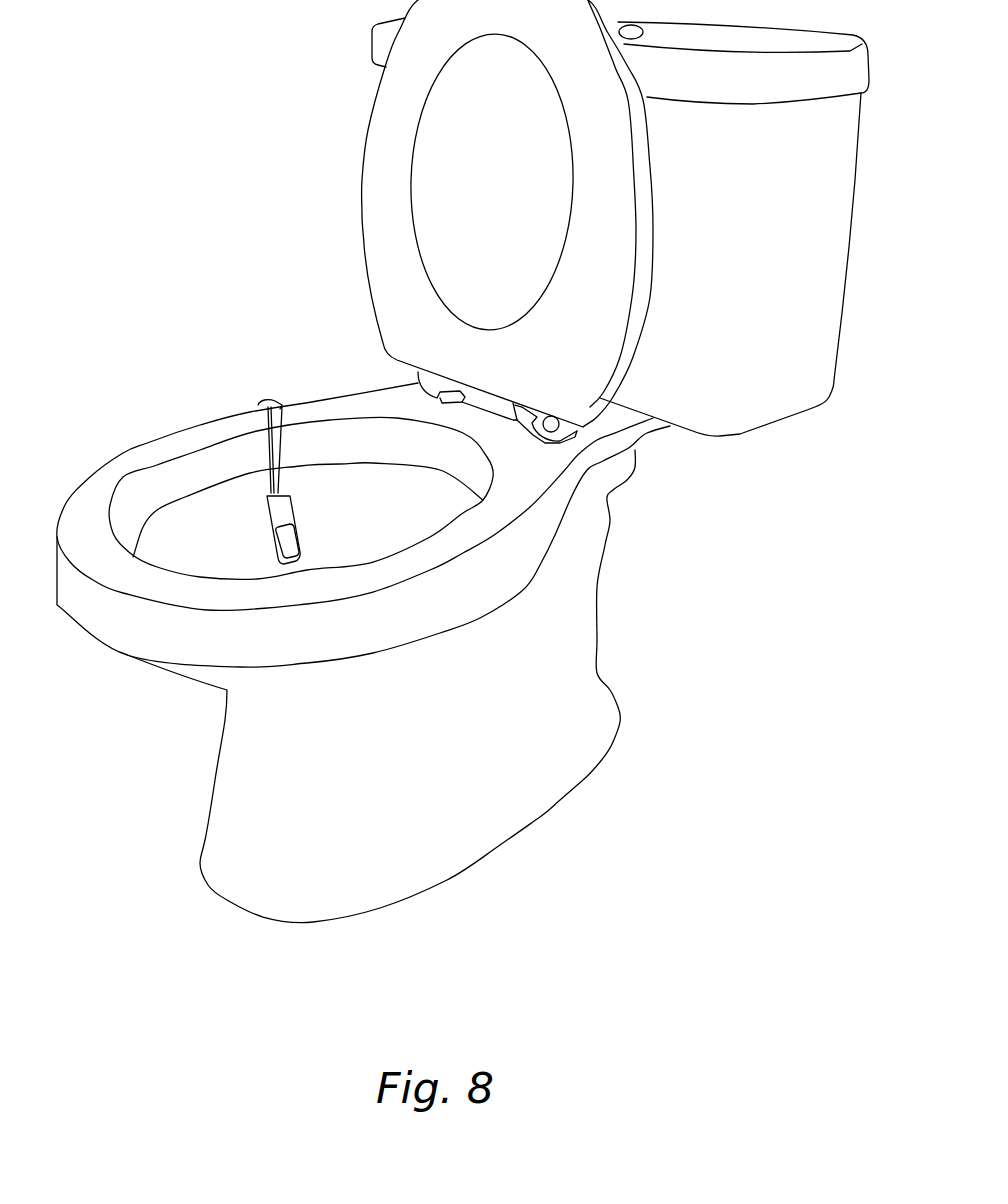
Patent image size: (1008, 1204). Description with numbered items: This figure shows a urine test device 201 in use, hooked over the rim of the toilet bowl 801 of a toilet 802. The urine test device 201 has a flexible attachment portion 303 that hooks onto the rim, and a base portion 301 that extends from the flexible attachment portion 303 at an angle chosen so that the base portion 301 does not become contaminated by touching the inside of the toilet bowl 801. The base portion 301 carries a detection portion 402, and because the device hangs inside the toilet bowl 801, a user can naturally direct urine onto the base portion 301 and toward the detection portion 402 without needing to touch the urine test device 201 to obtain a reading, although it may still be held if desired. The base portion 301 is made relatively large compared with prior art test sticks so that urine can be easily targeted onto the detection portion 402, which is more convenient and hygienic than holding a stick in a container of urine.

The toilet bowl 801 is at (137, 487).
The toilet 802 is at (737, 428).
The urine test device 201 is at (267, 458).
The flexible attachment portion 303 is at (267, 402).
The base portion 301 is at (287, 505).
The detection portion 402 is at (299, 548).